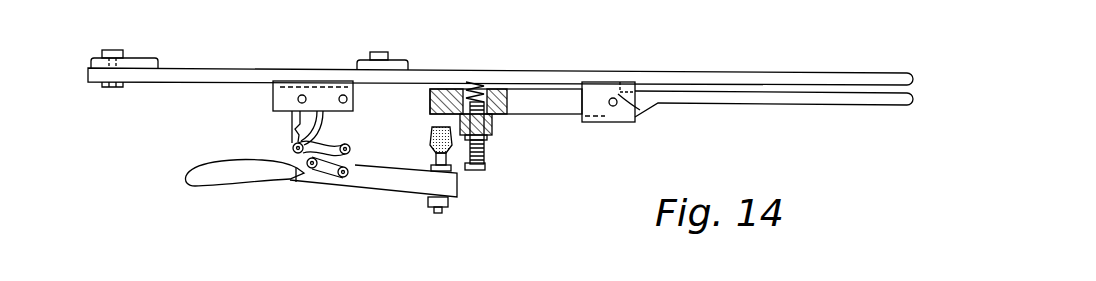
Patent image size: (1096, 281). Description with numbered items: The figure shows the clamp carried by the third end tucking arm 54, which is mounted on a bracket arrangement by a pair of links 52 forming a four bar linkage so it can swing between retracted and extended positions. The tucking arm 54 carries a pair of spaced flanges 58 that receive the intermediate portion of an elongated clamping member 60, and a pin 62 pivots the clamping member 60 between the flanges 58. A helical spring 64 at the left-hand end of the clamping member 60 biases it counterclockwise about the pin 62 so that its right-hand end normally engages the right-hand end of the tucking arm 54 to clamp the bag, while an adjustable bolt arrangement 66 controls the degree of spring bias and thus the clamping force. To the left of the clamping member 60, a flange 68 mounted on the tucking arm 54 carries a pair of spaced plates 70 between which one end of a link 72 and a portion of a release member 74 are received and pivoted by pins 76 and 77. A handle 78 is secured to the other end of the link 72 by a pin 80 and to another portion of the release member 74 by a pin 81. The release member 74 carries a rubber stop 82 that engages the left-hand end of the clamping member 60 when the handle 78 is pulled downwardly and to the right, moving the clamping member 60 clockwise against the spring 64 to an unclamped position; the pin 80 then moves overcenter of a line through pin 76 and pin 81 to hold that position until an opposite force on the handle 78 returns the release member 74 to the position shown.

The links 52 is at (134, 62).
The third end tucking arm 54 is at (527, 70).
The spaced flanges 58 is at (627, 119).
The clamping member 60 is at (645, 101).
The pin 62 is at (612, 98).
The spring 64 is at (482, 87).
The adjustable bolt arrangement 66 is at (486, 147).
The flange 68 is at (282, 102).
The spaced plates 70 is at (293, 135).
The link 72 is at (294, 166).
The release member 74 is at (360, 162).
The pin 76 is at (311, 138).
The pin 77 is at (350, 143).
The handle 78 is at (298, 180).
The pin 80 is at (312, 169).
The pin 81 is at (343, 178).
The rubber stop 82 is at (428, 142).